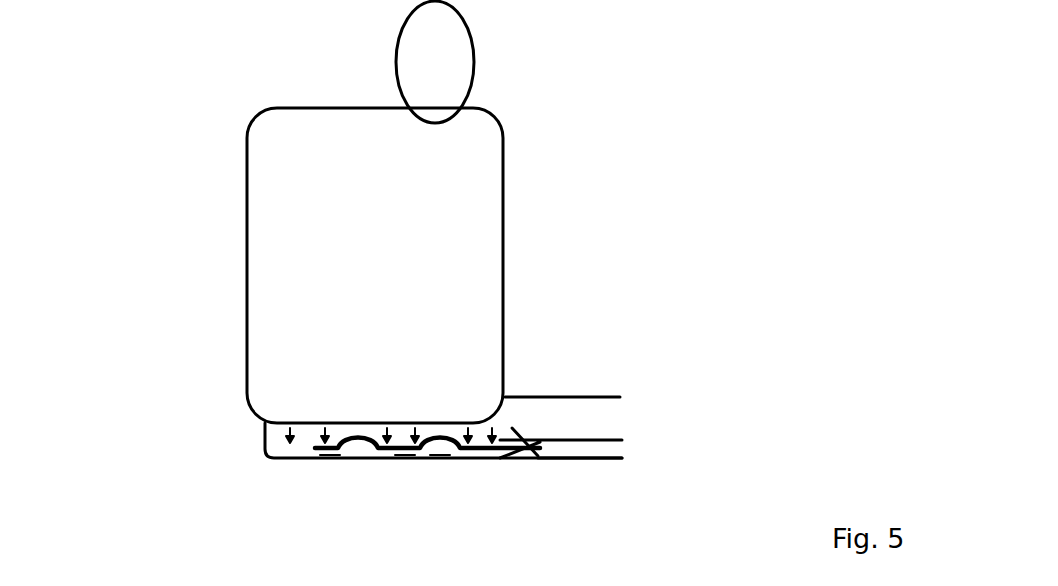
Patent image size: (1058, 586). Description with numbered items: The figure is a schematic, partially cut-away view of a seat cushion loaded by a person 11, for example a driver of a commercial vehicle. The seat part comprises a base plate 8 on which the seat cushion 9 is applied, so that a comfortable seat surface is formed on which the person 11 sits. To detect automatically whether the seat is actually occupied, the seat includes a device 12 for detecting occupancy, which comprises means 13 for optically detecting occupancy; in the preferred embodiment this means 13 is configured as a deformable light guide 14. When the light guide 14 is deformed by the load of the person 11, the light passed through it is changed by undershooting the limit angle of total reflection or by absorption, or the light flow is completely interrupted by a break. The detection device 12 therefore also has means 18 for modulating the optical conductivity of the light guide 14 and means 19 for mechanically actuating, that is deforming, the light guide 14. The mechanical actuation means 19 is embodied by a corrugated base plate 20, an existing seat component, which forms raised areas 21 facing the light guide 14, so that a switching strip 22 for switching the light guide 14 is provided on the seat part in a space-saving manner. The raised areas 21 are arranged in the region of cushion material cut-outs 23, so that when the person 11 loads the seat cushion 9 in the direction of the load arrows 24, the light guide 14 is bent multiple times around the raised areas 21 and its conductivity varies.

The base plate 8 is at (562, 458).
The seat cushion 9 is at (598, 400).
The person 11 is at (385, 238).
The device for detecting occupancy 12 is at (227, 457).
The means for optically detecting occupancy 13 is at (617, 435).
The deformable light guide 14 is at (568, 435).
The means for modulating an optical conductivity 18 is at (438, 468).
The means for mechanically actuating the light guide 19 is at (330, 454).
The corrugated base plate 20 is at (406, 461).
The raised areas 21 is at (523, 440).
The switching strip 22 is at (618, 448).
The cushion material cut-outs 23 is at (523, 460).
The load arrows 24 is at (258, 431).